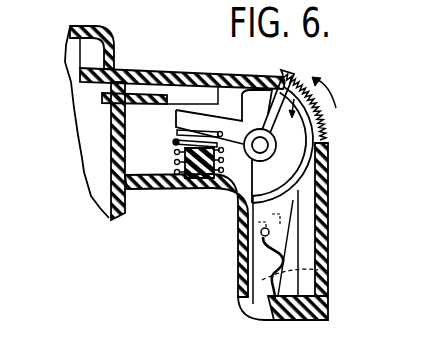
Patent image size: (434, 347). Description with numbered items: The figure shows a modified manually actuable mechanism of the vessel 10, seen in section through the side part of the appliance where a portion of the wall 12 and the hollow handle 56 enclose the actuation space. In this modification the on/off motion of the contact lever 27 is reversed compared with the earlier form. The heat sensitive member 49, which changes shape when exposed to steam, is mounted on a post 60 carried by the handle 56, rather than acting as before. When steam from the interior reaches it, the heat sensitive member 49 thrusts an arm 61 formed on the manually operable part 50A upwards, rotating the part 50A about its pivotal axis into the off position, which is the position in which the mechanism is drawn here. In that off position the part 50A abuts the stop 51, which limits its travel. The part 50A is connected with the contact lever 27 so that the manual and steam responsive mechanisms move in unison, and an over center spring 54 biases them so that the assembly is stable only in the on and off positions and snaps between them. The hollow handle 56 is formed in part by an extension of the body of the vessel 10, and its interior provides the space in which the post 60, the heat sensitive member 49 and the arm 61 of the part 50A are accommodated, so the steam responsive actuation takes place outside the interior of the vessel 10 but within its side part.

The vessel 10 is at (72, 135).
The wall 12 is at (107, 218).
The contact lever 27 is at (262, 286).
The heat sensitive member 49 is at (175, 143).
The part 50A is at (297, 80).
The stop 51 is at (331, 160).
The over center spring 54 is at (318, 271).
The hollow handle 56 is at (237, 268).
The post 60 is at (193, 186).
The arm 61 is at (204, 122).